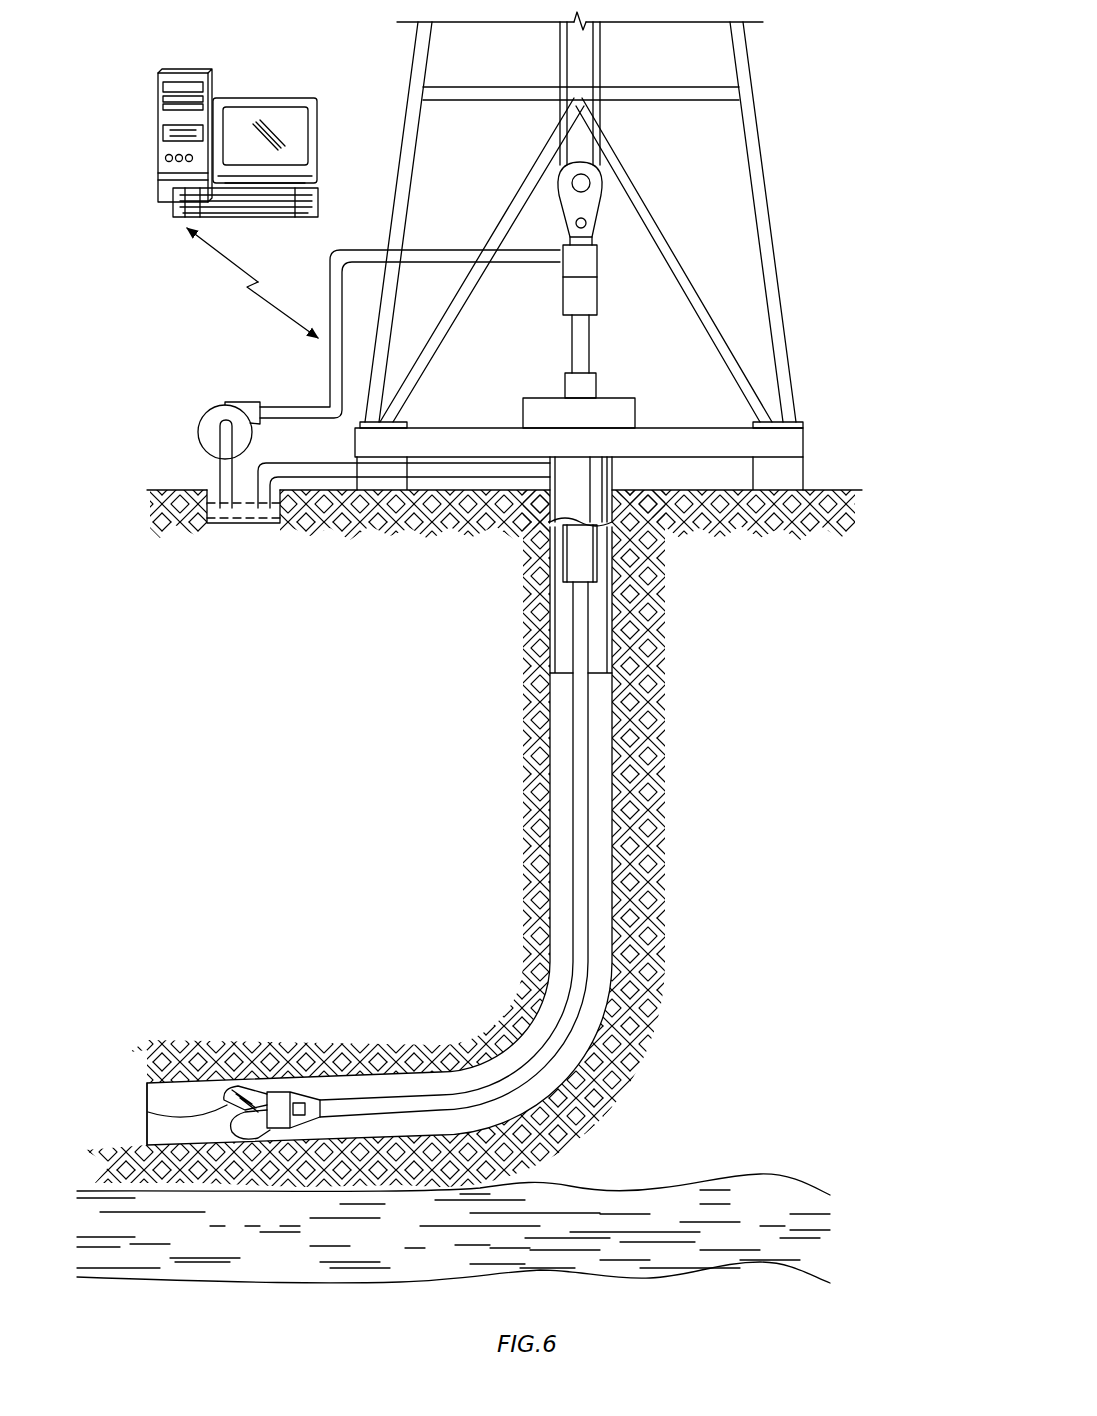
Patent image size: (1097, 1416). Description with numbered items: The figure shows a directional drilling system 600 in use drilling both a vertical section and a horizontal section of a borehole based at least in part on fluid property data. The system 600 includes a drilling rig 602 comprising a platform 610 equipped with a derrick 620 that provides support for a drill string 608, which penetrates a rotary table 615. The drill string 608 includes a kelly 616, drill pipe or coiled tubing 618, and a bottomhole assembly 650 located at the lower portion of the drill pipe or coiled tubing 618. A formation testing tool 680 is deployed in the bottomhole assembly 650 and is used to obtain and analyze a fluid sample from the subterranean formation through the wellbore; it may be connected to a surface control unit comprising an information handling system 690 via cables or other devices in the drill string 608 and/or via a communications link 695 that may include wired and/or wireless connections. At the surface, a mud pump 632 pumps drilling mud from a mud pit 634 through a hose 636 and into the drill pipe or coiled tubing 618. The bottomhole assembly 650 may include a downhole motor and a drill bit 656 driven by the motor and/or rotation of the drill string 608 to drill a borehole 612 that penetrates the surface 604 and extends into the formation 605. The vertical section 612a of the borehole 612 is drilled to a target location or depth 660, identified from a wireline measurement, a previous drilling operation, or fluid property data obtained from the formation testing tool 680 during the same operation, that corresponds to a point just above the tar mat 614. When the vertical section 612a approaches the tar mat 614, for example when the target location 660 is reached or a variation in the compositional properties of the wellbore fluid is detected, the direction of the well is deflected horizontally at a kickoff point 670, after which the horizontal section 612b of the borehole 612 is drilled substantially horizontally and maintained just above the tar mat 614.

The directional drilling system 600 is at (866, 70).
The drilling rig 602 is at (777, 222).
The surface 604 is at (803, 472).
The formation 605 is at (832, 672).
The drill string 608 is at (592, 942).
The platform 610 is at (803, 440).
The borehole 612 is at (545, 752).
The vertical section 612a is at (613, 700).
The horizontal section 612b is at (175, 1080).
The tar mat 614 is at (193, 1246).
The rotary table 615 is at (635, 410).
The kelly 616 is at (590, 348).
The drill pipe or coiled tubing 618 is at (588, 757).
The derrick 620 is at (755, 112).
The mud pump 632 is at (240, 400).
The mud pit 634 is at (243, 520).
The hose 636 is at (330, 285).
The bottomhole assembly 650 is at (213, 1035).
The drill bit 656 is at (148, 1112).
The target location or depth 660 is at (613, 968).
The kickoff point 670 is at (587, 1083).
The formation testing tool 680 is at (303, 1100).
The information handling system 690 is at (172, 72).
The communications link 695 is at (228, 257).